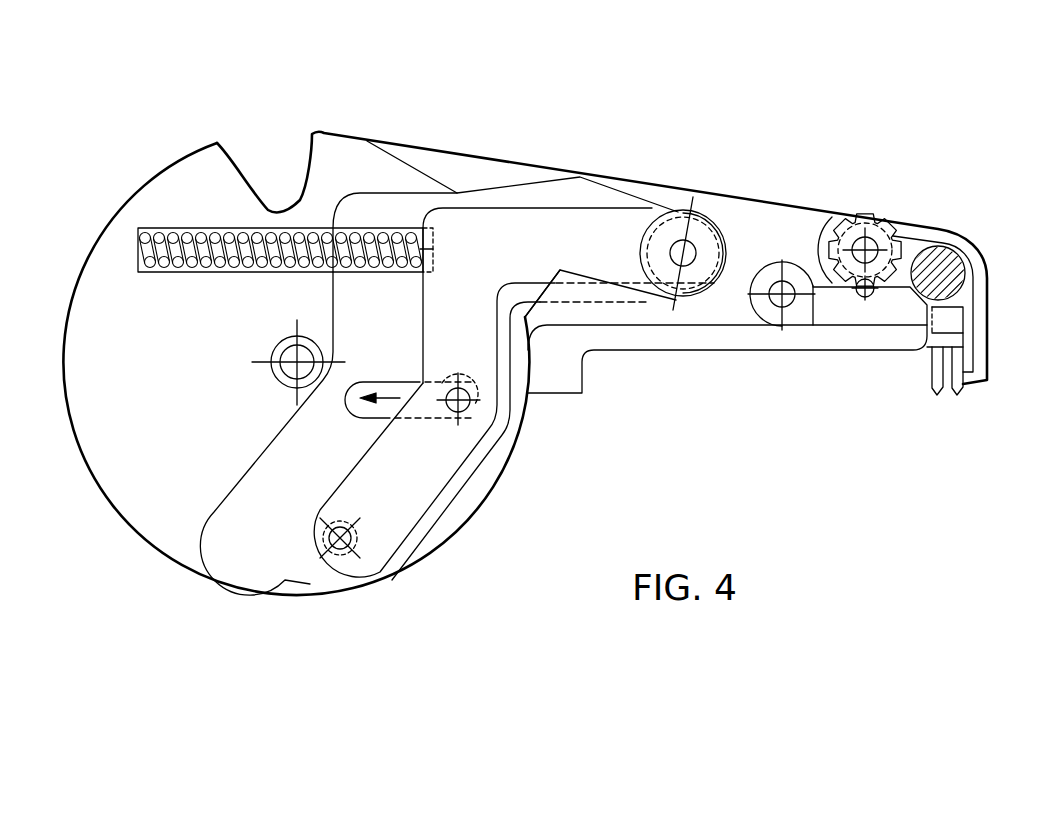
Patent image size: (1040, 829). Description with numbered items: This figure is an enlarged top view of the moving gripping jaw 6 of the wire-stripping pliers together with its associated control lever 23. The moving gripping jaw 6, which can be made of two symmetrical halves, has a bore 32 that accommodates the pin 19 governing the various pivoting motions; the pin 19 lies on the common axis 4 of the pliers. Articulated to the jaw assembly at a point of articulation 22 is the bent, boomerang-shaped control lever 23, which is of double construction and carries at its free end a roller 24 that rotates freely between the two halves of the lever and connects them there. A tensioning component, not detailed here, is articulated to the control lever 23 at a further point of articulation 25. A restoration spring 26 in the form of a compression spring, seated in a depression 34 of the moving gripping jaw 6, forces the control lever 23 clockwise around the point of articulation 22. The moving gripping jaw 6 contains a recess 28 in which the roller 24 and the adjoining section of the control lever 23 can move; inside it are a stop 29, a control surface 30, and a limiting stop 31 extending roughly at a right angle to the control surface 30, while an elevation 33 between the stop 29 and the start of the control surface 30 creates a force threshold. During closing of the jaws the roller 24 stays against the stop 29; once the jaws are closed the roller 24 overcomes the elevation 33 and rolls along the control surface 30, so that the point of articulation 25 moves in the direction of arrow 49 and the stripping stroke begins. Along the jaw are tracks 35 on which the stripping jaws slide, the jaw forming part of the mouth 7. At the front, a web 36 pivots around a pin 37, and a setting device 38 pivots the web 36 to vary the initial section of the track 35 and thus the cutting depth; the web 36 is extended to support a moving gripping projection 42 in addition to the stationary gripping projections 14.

The common axis 4 is at (285, 375).
The moving gripping jaw 6 is at (113, 270).
The mouth 7 is at (903, 435).
The gripping projections 14 is at (933, 388).
The pin 19 is at (270, 352).
The point of articulation 22 is at (337, 522).
The control lever 23 is at (450, 320).
The roller 24 is at (685, 192).
The point of articulation 25 is at (465, 407).
The restoration spring 26 is at (160, 229).
The recess 28 is at (572, 172).
The stop 29 is at (678, 308).
The control surface 30 is at (740, 263).
The limiting stop 31 is at (560, 277).
The bore 32 is at (277, 340).
The elevation 33 is at (648, 290).
The depression 34 is at (217, 229).
The tracks 35 is at (797, 347).
The web 36 is at (897, 320).
The pin 37 is at (790, 278).
The setting device 38 is at (880, 213).
The moving gripping projection 42 is at (947, 390).
The arrow 49 is at (387, 395).